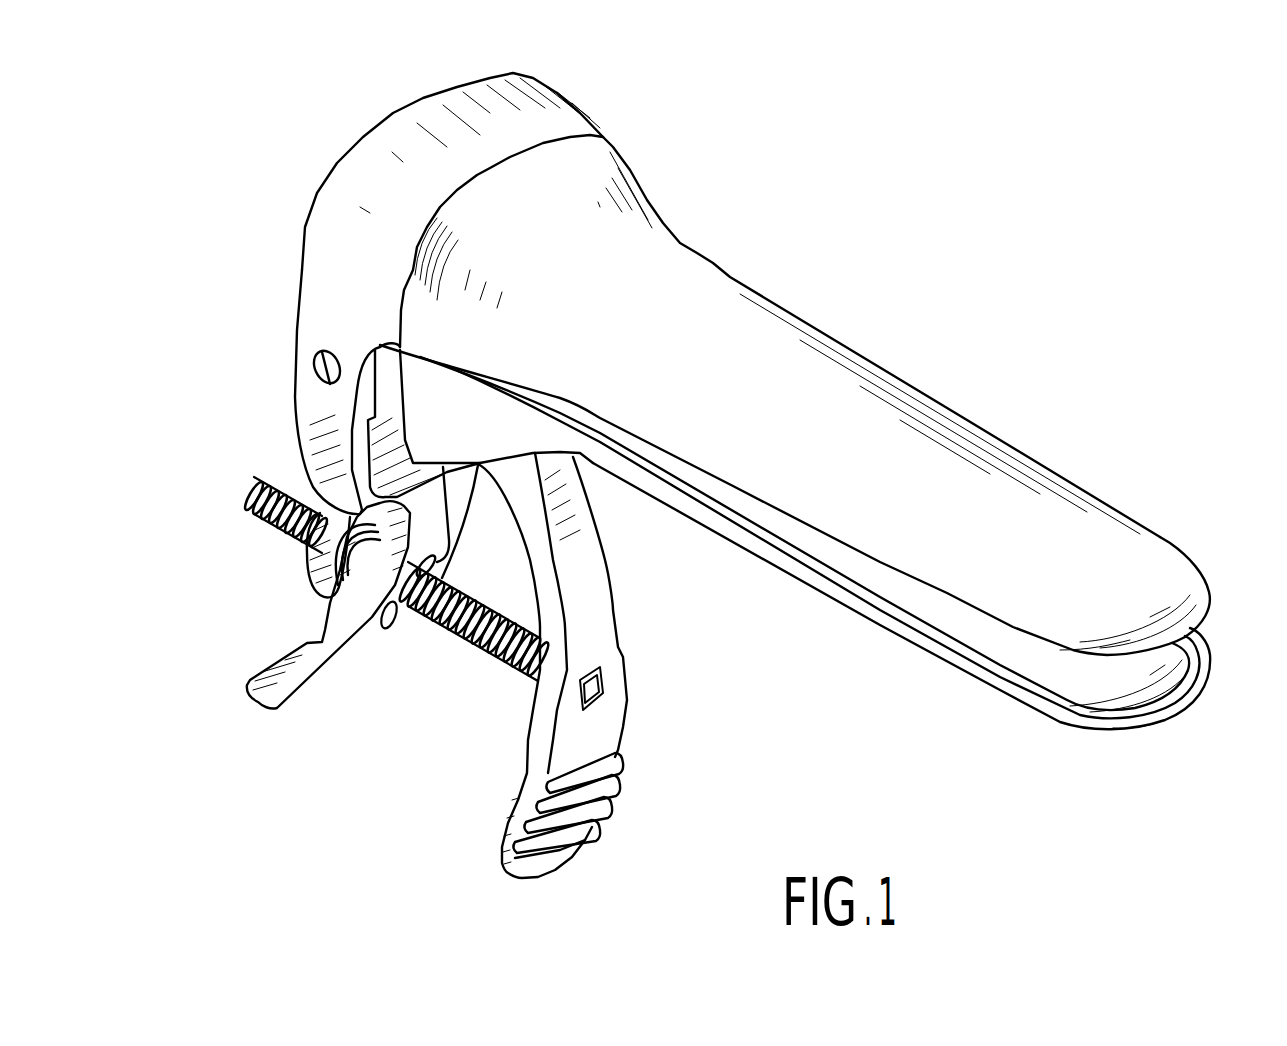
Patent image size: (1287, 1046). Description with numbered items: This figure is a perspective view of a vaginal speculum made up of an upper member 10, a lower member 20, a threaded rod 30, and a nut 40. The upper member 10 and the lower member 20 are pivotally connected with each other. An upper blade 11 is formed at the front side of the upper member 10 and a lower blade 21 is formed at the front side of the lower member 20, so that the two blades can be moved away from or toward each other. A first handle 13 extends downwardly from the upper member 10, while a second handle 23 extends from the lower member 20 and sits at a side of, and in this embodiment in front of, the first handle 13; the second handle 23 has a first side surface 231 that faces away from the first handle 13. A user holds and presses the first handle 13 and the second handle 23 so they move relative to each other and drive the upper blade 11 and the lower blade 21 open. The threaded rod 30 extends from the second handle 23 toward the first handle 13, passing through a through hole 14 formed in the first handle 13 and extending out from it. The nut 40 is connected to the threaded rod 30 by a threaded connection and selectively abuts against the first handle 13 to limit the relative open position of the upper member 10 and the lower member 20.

The upper member 10 is at (877, 368).
The upper blade 11 is at (1147, 545).
The first handle 13 is at (357, 657).
The through hole 14 is at (393, 612).
The lower member 20 is at (1070, 727).
The lower blade 21 is at (1153, 722).
The second handle 23 is at (603, 593).
The first side surface 231 is at (595, 722).
The threaded rod 30 is at (243, 517).
The nut 40 is at (315, 563).